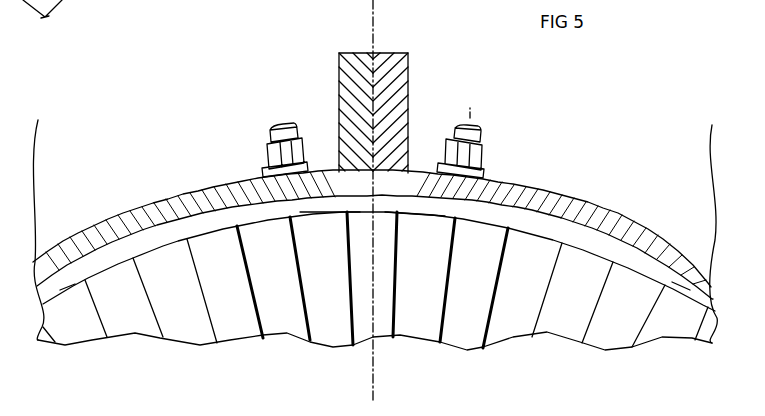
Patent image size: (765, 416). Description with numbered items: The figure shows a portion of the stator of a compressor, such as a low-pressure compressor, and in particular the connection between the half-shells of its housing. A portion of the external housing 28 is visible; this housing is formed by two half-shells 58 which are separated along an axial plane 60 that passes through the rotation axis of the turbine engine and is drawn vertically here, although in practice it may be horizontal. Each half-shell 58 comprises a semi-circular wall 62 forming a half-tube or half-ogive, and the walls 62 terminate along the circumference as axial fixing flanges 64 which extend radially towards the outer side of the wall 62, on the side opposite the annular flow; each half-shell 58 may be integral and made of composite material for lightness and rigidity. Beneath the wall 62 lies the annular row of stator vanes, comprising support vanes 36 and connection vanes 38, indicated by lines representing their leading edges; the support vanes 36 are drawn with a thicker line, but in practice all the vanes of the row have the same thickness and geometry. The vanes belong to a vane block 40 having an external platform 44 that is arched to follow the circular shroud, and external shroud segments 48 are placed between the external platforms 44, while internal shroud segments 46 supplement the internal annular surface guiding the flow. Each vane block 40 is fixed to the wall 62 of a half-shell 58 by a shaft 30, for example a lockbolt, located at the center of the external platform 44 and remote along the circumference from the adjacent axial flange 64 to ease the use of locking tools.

The external housing 28 is at (113, 134).
The shaft 30 is at (270, 145).
The support vanes 36 is at (250, 278).
The connection vanes 38 is at (190, 278).
The vane block 40 is at (340, 334).
The external platform 44 is at (328, 207).
The internal shroud segment 46 is at (78, 10).
The external shroud segment 48 is at (60, 287).
The half-shell 58 is at (603, 134).
The axial plane 60 is at (375, 36).
The semi-circular wall 62 is at (197, 210).
The axial fixing flange 64 is at (347, 94).